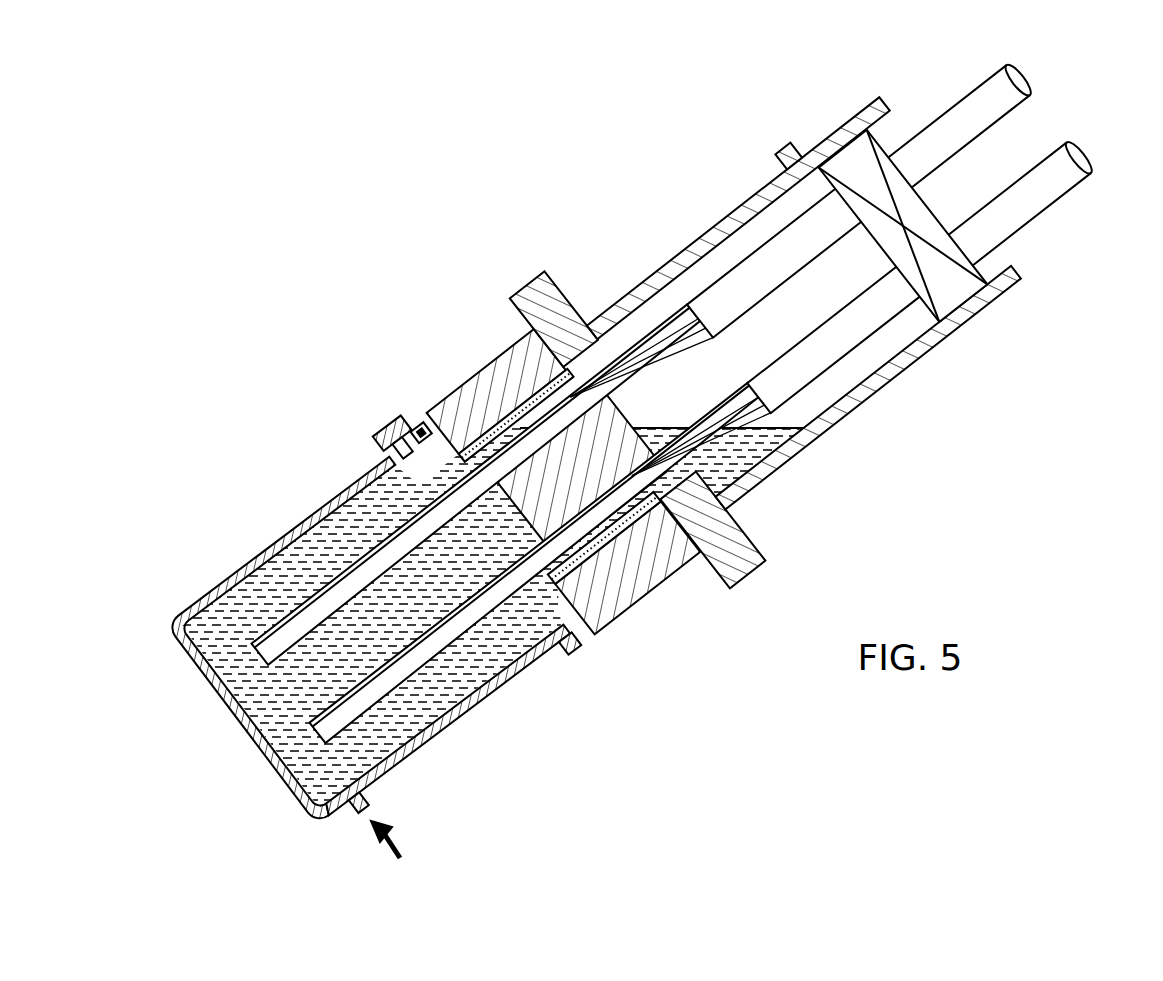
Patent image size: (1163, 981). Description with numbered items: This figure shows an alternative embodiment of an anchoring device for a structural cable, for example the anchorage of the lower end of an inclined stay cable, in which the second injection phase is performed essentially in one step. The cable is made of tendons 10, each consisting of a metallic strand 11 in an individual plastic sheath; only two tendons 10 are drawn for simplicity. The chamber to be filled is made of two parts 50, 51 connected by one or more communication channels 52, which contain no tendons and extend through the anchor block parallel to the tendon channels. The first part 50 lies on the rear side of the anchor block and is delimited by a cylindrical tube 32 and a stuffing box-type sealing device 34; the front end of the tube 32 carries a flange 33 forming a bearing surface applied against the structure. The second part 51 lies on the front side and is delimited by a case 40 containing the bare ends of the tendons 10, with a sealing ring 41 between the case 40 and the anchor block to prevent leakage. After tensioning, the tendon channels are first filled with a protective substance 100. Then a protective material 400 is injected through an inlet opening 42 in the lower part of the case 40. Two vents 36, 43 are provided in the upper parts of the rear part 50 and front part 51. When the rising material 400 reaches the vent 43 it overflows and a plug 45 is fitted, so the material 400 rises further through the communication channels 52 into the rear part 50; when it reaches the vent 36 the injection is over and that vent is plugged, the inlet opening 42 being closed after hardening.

The tendons 10 is at (1040, 82).
The metallic strand 11 is at (357, 693).
The tube 32 is at (683, 248).
The flange 33 is at (542, 300).
The sealing device 34 is at (960, 298).
The vent 36 is at (790, 150).
The case 40 is at (250, 733).
The sealing ring 41 is at (577, 640).
The inlet opening 42 is at (350, 814).
The vent 43 is at (383, 458).
The plug 45 is at (392, 430).
The first part of the chamber 50 is at (850, 374).
The second part of the chamber 51 is at (442, 698).
The communication channels 52 is at (468, 412).
The protective substance 100 is at (510, 415).
The protective material 400 is at (750, 458).